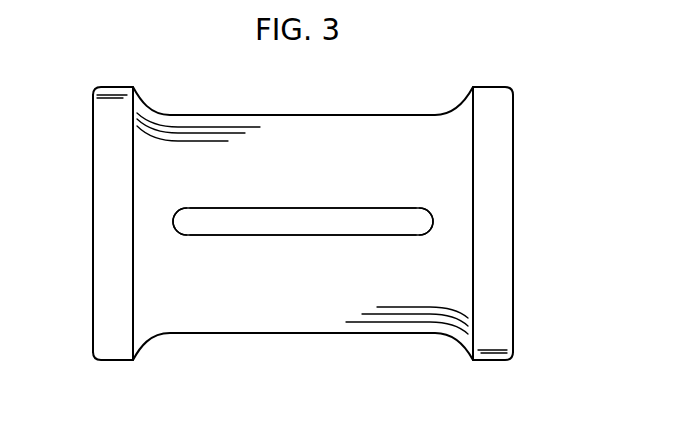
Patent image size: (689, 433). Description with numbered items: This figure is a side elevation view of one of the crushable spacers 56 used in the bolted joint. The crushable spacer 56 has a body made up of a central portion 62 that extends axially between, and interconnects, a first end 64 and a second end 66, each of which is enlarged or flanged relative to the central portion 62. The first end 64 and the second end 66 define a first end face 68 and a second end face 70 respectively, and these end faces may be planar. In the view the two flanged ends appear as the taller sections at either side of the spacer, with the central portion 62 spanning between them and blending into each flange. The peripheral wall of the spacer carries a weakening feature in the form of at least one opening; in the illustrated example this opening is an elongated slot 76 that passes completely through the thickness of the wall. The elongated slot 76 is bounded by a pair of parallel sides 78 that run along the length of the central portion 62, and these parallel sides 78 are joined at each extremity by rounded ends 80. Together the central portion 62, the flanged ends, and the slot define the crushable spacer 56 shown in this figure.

The crushable spacer 56 is at (338, 76).
The central portion 62 is at (296, 322).
The first end 64 is at (113, 349).
The second end 66 is at (493, 355).
The first end face 68 is at (92, 333).
The second end face 70 is at (514, 322).
The elongated slot 76 is at (356, 190).
The parallel sides 78 is at (291, 208).
The rounded ends 80 is at (173, 221).